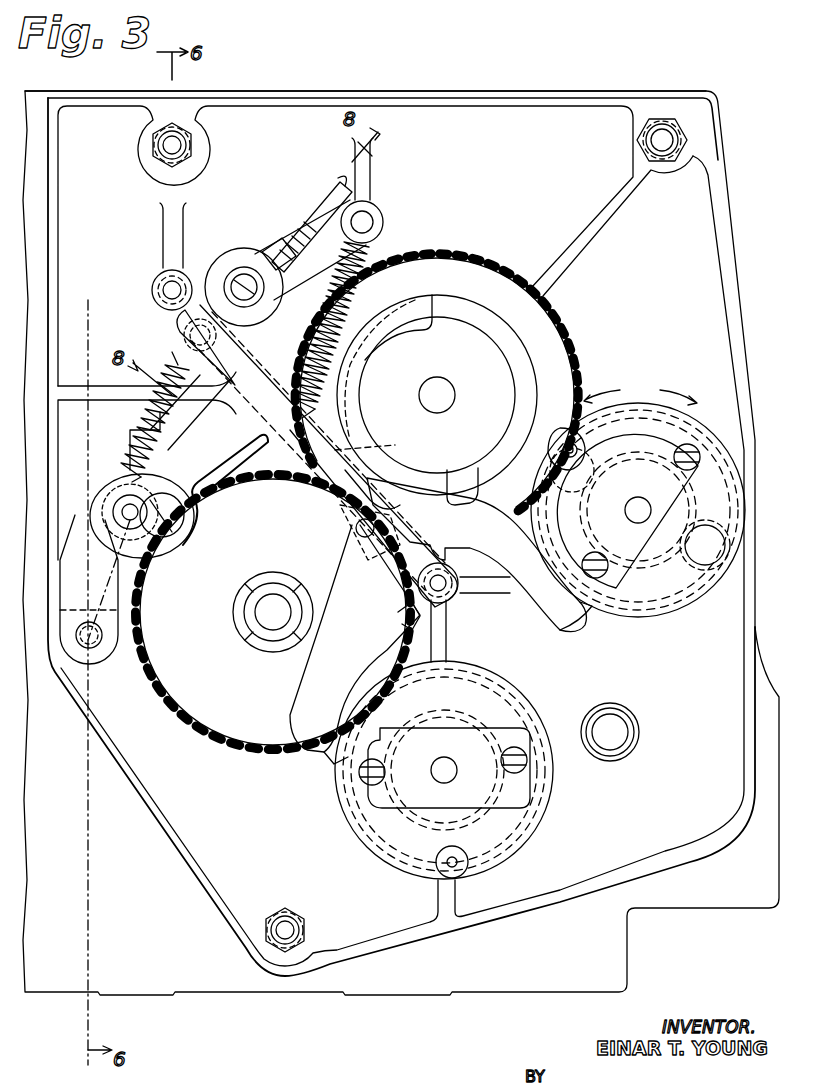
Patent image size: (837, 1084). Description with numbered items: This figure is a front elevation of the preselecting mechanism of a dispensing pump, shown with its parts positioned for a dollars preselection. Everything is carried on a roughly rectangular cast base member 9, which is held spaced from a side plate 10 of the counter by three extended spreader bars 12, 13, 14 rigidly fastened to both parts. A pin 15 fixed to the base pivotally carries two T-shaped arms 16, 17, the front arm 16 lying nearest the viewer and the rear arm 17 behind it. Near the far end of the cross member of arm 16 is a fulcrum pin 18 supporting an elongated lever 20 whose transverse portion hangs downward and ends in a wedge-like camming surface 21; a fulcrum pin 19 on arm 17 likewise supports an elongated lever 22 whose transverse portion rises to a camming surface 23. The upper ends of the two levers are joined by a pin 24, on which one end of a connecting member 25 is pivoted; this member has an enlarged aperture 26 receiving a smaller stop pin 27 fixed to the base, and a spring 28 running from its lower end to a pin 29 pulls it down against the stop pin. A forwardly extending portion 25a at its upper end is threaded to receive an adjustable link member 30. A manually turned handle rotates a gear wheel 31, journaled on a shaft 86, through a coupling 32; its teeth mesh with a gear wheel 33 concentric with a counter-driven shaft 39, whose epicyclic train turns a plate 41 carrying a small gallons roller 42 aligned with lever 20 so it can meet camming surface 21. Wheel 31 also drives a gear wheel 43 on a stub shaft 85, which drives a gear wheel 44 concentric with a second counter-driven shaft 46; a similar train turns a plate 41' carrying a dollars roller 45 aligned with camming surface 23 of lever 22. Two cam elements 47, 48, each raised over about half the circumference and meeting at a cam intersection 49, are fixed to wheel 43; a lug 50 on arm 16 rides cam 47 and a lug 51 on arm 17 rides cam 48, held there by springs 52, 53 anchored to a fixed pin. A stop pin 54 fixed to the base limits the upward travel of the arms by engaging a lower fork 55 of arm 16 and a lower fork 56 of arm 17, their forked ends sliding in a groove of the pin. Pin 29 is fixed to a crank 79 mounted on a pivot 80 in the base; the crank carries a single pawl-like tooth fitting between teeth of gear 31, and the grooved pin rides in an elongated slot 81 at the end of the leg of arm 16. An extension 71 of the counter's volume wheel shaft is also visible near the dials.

The base member 9 is at (512, 101).
The side plate 10 is at (695, 908).
The spreader bar 12 is at (186, 143).
The spreader bar 13 is at (666, 132).
The spreader bar 14 is at (293, 927).
The pin 15 is at (163, 292).
The T-shaped arm 16 is at (330, 498).
The T-shaped arm 17 is at (275, 362).
The fulcrum pin 18 is at (362, 536).
The fulcrum pin 19 is at (355, 525).
The elongated lever 20 is at (324, 682).
The camming surface 21 is at (332, 766).
The elongated lever 22 is at (530, 607).
The camming surface 23 is at (585, 612).
The pin 24 is at (175, 332).
The connecting member 25 is at (218, 272).
The forwardly-extending portion 25a is at (268, 242).
The enlarged aperture 26 is at (258, 302).
The stop pin 27 is at (244, 276).
The spring 28 is at (150, 410).
The pin 29 is at (125, 508).
The link member 30 is at (325, 188).
The gear wheel 31 is at (212, 740).
The coupling 32 is at (240, 620).
The gear wheel 33 is at (532, 830).
The shaft 39 is at (447, 776).
The plate 41 is at (444, 748).
The plate 41' is at (643, 536).
The gallons roller 42 is at (442, 868).
The gear wheel 43 is at (463, 258).
The gear wheel 44 is at (697, 432).
The dollars roller 45 is at (578, 449).
The shaft 46 is at (632, 511).
The cam element 47 is at (412, 294).
The cam element 48 is at (482, 313).
The cam intersection 49 is at (452, 472).
The lug 50 is at (347, 452).
The lug 51 is at (378, 457).
The spring 52 is at (330, 330).
The spring 53 is at (380, 242).
The stop pin 54 is at (454, 592).
The lower fork 55 is at (408, 622).
The lower fork 56 is at (440, 608).
The extension of the volume wheel shaft 71 is at (626, 732).
The crank 79 is at (118, 590).
The pivot 80 is at (85, 640).
The elongated slot 81 is at (172, 522).
The stub shaft 85 is at (456, 396).
The shaft 86 is at (270, 606).